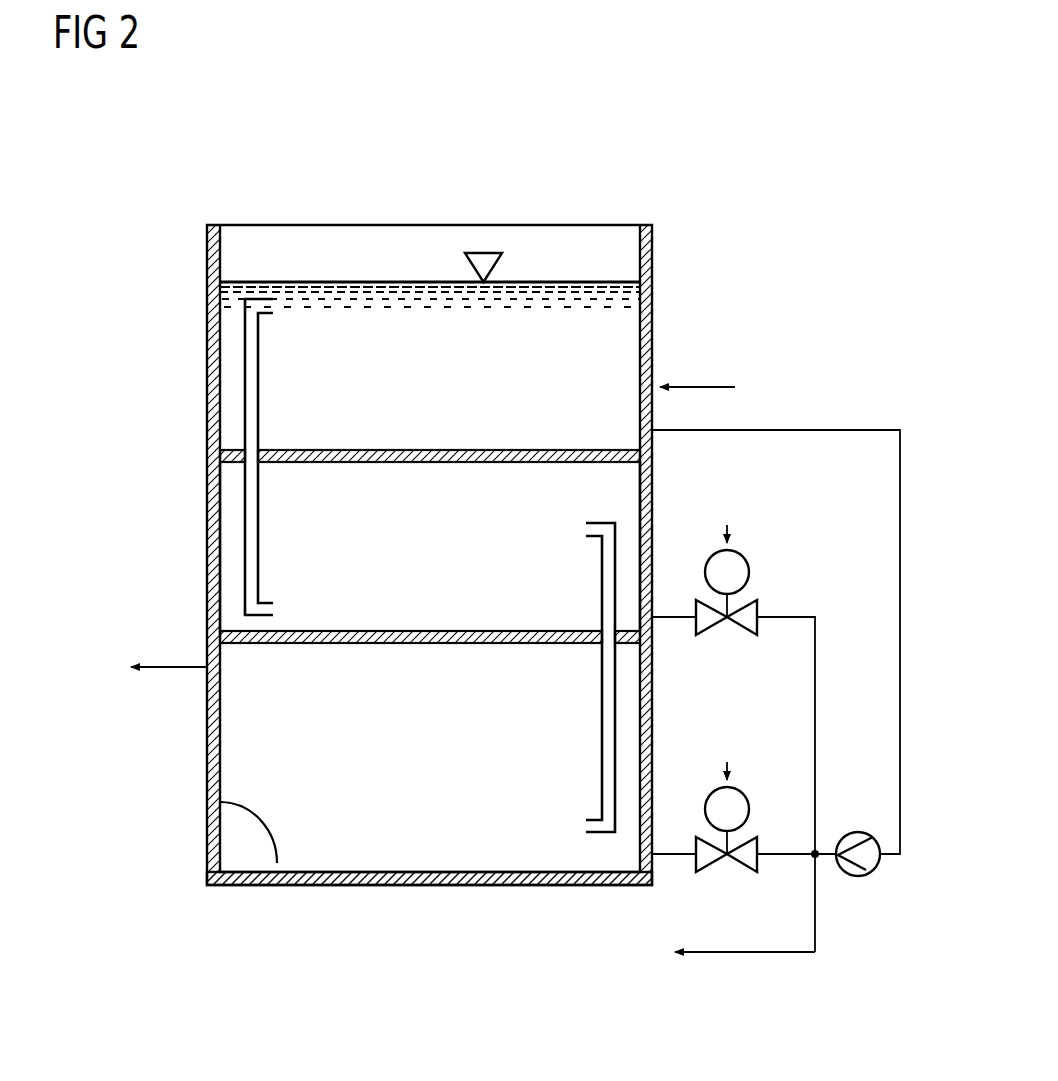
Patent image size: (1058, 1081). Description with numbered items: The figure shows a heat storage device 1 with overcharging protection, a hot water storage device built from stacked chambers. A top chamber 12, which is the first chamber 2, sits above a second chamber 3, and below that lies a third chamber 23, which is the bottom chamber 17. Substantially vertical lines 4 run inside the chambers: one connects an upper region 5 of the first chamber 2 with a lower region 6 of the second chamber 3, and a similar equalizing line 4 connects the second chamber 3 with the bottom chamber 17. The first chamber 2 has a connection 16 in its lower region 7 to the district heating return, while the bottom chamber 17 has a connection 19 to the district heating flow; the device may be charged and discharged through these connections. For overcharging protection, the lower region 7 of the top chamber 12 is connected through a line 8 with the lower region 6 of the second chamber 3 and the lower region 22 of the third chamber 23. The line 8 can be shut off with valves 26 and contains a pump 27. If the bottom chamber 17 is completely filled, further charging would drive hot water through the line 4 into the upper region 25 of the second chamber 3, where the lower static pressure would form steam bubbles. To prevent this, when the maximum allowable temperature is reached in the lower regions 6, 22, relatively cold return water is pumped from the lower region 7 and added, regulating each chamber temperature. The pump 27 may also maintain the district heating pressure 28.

The heat storage device 1 is at (258, 113).
The first chamber 2 is at (482, 555).
The top chamber 12 is at (622, 337).
The second chamber 3 is at (640, 489).
The line 4 is at (250, 527).
The upper region of the first chamber 5 is at (228, 299).
The lower region of the second chamber 6 is at (232, 611).
The lower region of the first chamber 7 is at (232, 426).
The line 8 is at (785, 857).
The connection to the district heating return 16 is at (712, 387).
The bottom chamber 17 is at (366, 859).
The third chamber 23 is at (233, 848).
The connection to the district heating flow 19 is at (157, 668).
The lower region of the third chamber 22 is at (222, 801).
The upper region of the second chamber 25 is at (232, 490).
The valves 26 is at (737, 637).
The pump 27 is at (857, 877).
The district heating pressure 28 is at (739, 955).